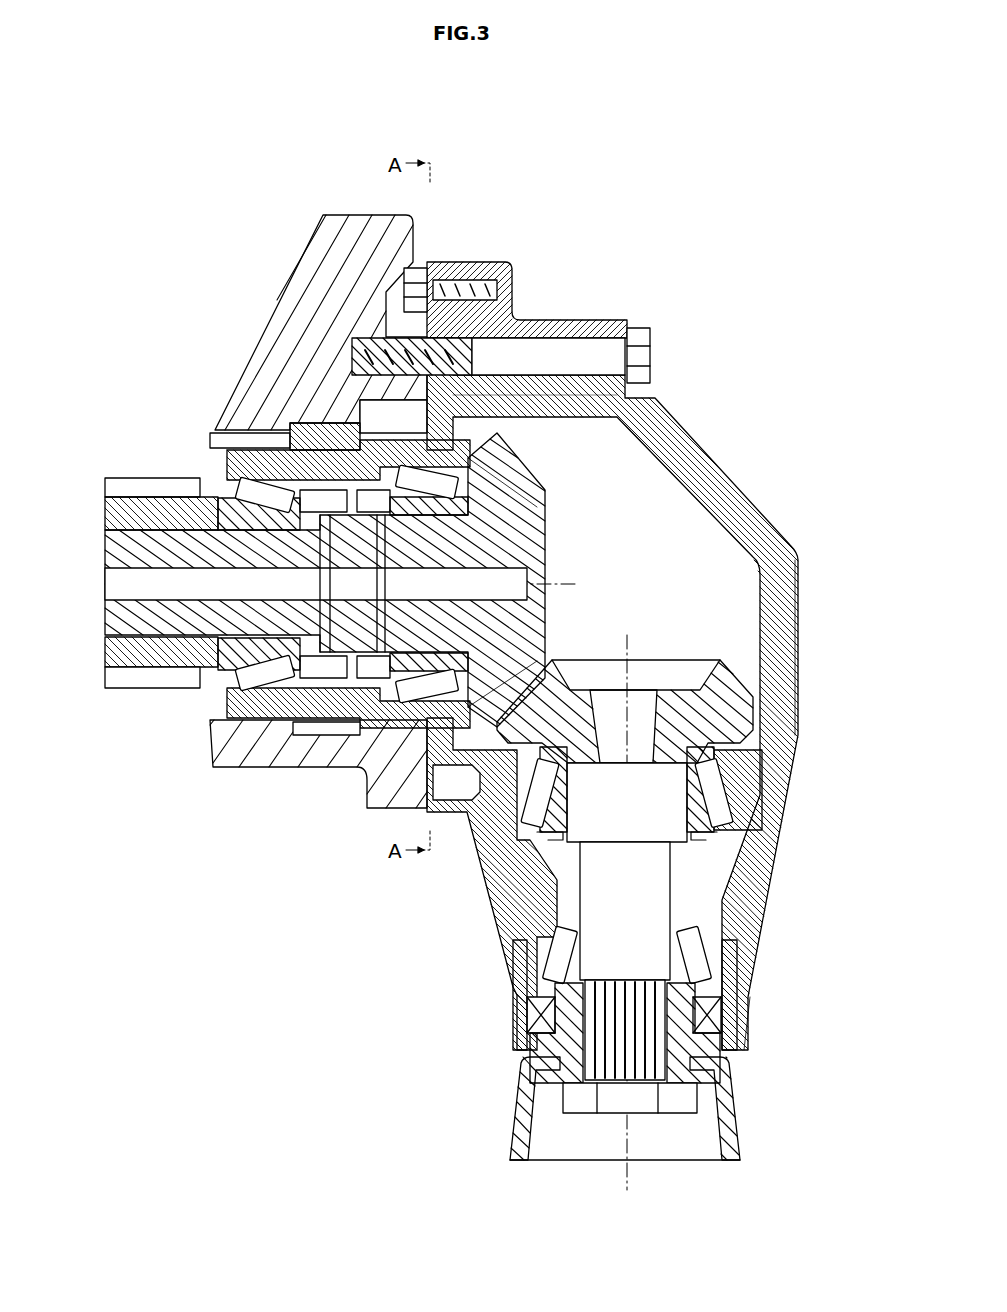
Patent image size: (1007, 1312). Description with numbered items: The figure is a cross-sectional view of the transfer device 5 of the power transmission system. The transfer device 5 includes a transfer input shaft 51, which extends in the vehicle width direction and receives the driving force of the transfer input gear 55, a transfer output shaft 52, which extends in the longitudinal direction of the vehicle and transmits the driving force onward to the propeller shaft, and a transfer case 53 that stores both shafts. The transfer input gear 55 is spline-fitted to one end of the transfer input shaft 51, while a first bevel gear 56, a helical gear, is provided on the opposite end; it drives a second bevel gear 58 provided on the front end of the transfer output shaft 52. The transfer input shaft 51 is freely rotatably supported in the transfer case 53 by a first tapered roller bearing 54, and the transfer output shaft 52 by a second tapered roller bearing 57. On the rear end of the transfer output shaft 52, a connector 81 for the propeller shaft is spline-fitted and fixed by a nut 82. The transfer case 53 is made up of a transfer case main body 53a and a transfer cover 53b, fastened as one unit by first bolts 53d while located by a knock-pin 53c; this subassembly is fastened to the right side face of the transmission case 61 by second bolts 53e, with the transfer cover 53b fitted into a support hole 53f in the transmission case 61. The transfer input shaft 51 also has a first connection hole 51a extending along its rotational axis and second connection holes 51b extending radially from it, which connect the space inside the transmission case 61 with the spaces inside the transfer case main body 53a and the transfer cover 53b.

The transfer device 5 is at (632, 305).
The transfer input shaft 51 is at (321, 626).
The first connection hole 51a is at (123, 573).
The second connection holes 51b is at (130, 546).
The transfer output shaft 52 is at (658, 900).
The transfer case 53 is at (478, 245).
The transfer case main body 53a is at (760, 512).
The transfer cover 53b is at (280, 727).
The knock-pin 53c is at (450, 785).
The first bolts 53d is at (410, 300).
The second bolts 53e is at (652, 356).
The support hole 53f is at (357, 772).
The first tapered roller bearing 54 is at (553, 385).
The transfer input gear 55 is at (122, 690).
The first bevel gear 56 is at (655, 445).
The second tapered roller bearing 57 is at (778, 818).
The second bevel gear 58 is at (745, 690).
The transmission case 61 is at (323, 215).
The connector 81 is at (740, 1112).
The nut 82 is at (577, 1097).